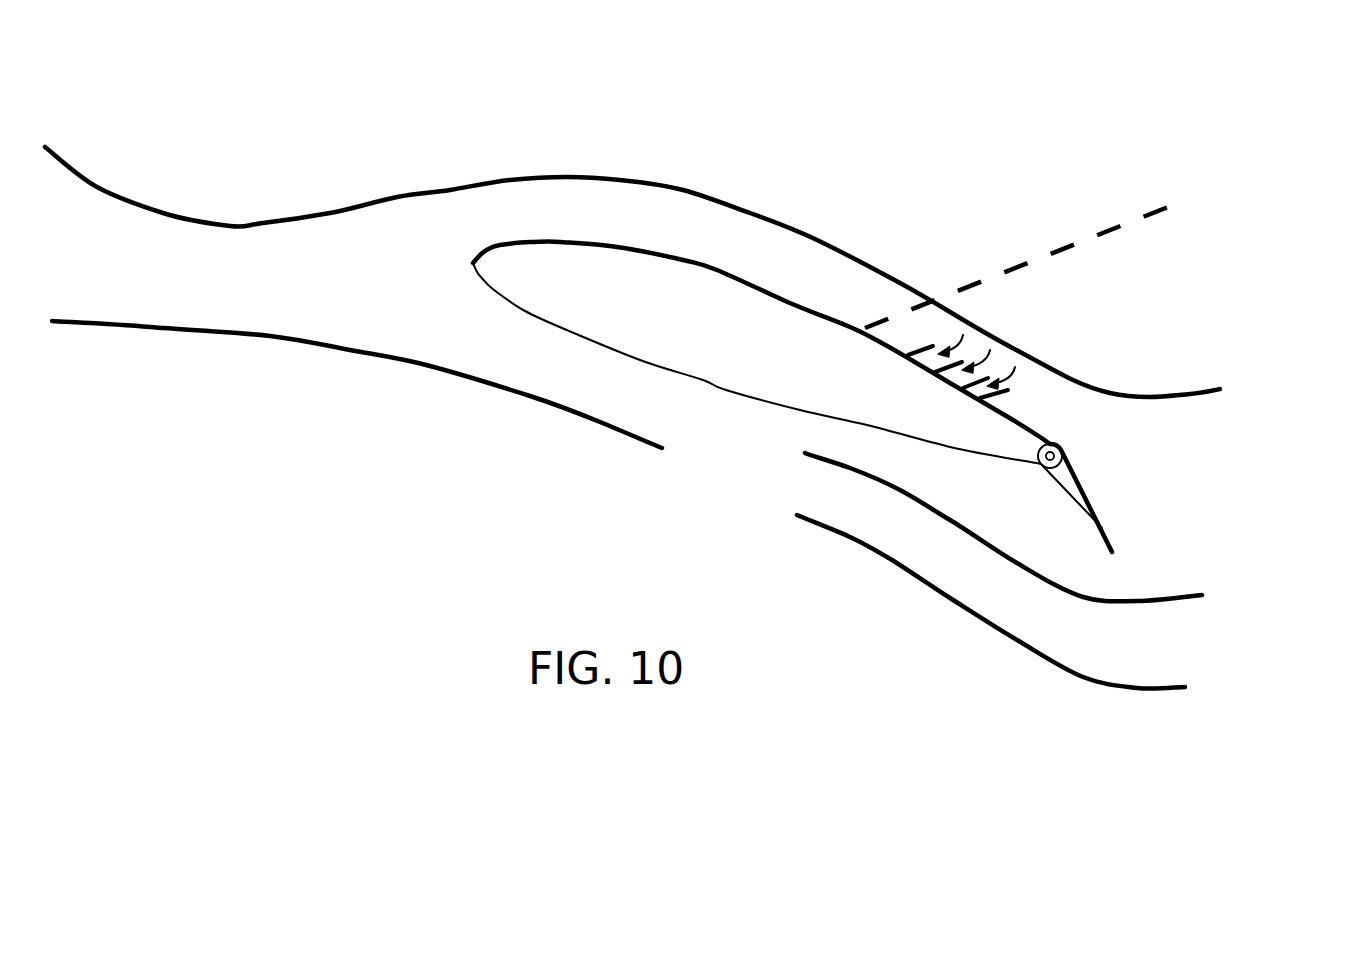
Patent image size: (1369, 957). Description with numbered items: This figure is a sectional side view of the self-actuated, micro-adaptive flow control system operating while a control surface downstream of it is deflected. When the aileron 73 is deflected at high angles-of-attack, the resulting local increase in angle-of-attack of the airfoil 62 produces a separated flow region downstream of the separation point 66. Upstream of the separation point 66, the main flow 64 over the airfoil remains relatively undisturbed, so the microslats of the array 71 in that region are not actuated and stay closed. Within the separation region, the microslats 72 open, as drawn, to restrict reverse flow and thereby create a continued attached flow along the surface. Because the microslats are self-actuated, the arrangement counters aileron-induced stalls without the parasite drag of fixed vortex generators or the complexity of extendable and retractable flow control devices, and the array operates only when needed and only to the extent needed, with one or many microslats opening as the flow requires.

The airfoil 62 is at (530, 396).
The main flow 64 is at (253, 224).
The separation point 66 is at (863, 328).
The array 71 is at (717, 265).
The microslats 72 is at (915, 357).
The aileron 73 is at (1102, 526).